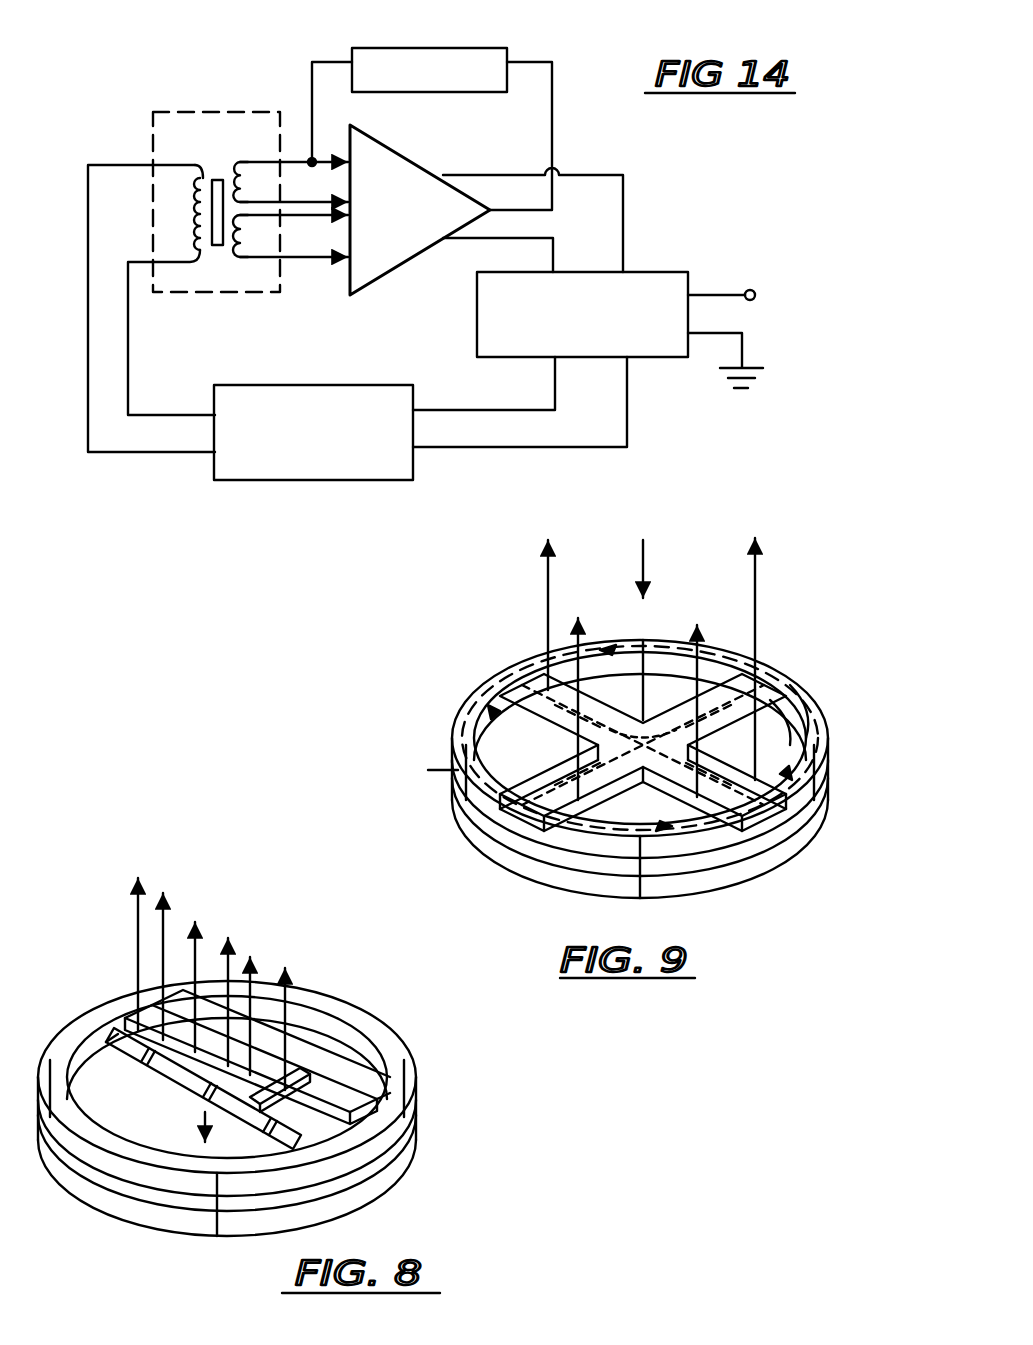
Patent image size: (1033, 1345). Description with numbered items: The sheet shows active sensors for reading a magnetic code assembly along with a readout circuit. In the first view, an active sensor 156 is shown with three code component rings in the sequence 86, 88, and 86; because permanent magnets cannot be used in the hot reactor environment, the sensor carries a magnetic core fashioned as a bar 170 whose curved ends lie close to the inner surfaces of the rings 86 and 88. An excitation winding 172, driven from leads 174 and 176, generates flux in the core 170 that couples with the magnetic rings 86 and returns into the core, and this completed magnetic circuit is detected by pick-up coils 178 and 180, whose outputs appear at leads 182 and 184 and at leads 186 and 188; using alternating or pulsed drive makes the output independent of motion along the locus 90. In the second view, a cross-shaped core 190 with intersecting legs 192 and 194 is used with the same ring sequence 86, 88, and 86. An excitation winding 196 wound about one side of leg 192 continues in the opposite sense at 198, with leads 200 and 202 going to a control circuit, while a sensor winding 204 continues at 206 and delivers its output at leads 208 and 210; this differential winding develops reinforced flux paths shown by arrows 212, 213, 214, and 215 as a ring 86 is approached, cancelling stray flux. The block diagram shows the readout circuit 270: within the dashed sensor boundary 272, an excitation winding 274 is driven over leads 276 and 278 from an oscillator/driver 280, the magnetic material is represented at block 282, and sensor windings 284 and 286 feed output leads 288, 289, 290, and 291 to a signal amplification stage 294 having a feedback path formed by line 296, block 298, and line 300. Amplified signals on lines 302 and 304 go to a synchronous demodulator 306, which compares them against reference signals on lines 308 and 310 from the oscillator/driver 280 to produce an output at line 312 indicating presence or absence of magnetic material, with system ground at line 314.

In FIG. 9, the code component ring 86 is at (830, 757).
In FIG. 8, the code component ring 86 is at (418, 1088).
In FIG. 9, the code component ring 88 is at (830, 785).
In FIG. 8, the code component ring 88 is at (418, 1110).
In FIG. 9, the locus 90 is at (645, 550).
In FIG. 8, the locus 90 is at (204, 1128).
In FIG. 9, the active sensor 156 is at (880, 585).
In FIG. 8, the active sensor 156 is at (458, 968).
In FIG. 8, the bar 170 is at (128, 1020).
In FIG. 8, the excitation winding 172 is at (195, 1108).
In FIG. 8, the lead 174 is at (200, 938).
In FIG. 8, the lead 176 is at (235, 955).
In FIG. 8, the pick-up coil 178 is at (150, 1072).
In FIG. 8, the pick-up coil 180 is at (260, 1110).
In FIG. 8, the lead 182 is at (140, 892).
In FIG. 8, the lead 184 is at (165, 910).
In FIG. 8, the lead 186 is at (255, 972).
In FIG. 8, the lead 188 is at (290, 985).
In FIG. 9, the cross-shaped core 190 is at (522, 682).
In FIG. 9, the core leg 192 is at (535, 800).
In FIG. 9, the core leg 194 is at (752, 672).
In FIG. 9, the excitation winding 196 is at (588, 800).
In FIG. 9, the excitation winding portion 198 is at (806, 705).
In FIG. 9, the lead 200 is at (605, 580).
In FIG. 9, the lead 202 is at (757, 560).
In FIG. 9, the sensor winding 204 is at (600, 648).
In FIG. 9, the sensor winding portion 206 is at (778, 858).
In FIG. 9, the sensing output lead 208 is at (548, 570).
In FIG. 9, the sensing output lead 210 is at (697, 625).
In FIG. 9, the magnetic flux path arrow 212 is at (603, 898).
In FIG. 9, the magnetic flux path arrow 213 is at (826, 724).
In FIG. 9, the magnetic flux path arrow 214 is at (742, 645).
In FIG. 9, the magnetic flux path arrow 215 is at (421, 773).
In FIG. 14, the readout circuit 270 is at (640, 22).
In FIG. 14, the sensor 272 is at (205, 112).
In FIG. 14, the excitation winding 274 is at (200, 292).
In FIG. 14, the lead 276 is at (128, 355).
In FIG. 14, the lead 278 is at (118, 452).
In FIG. 14, the oscillator/driver 280 is at (310, 385).
In FIG. 14, the magnetic material block 282 is at (150, 165).
In FIG. 14, the sensor winding 284 is at (238, 290).
In FIG. 14, the sensor winding 286 is at (250, 162).
In FIG. 14, the output lead 288 is at (350, 125).
In FIG. 14, the output lead 289 is at (288, 192).
In FIG. 14, the output lead 290 is at (298, 235).
In FIG. 14, the output lead 291 is at (295, 258).
In FIG. 14, the signal amplification stage 294 is at (383, 278).
In FIG. 14, the feedback line 296 is at (556, 112).
In FIG. 14, the feedback block 298 is at (438, 48).
In FIG. 14, the feedback line 300 is at (335, 62).
In FIG. 14, the amplified signal line 302 is at (556, 243).
In FIG. 14, the amplified signal line 304 is at (626, 190).
In FIG. 14, the synchronous demodulator 306 is at (670, 272).
In FIG. 14, the reference signal line 308 is at (455, 410).
In FIG. 14, the reference signal line 310 is at (468, 447).
In FIG. 14, the output line 312 is at (718, 295).
In FIG. 14, the ground line 314 is at (745, 340).